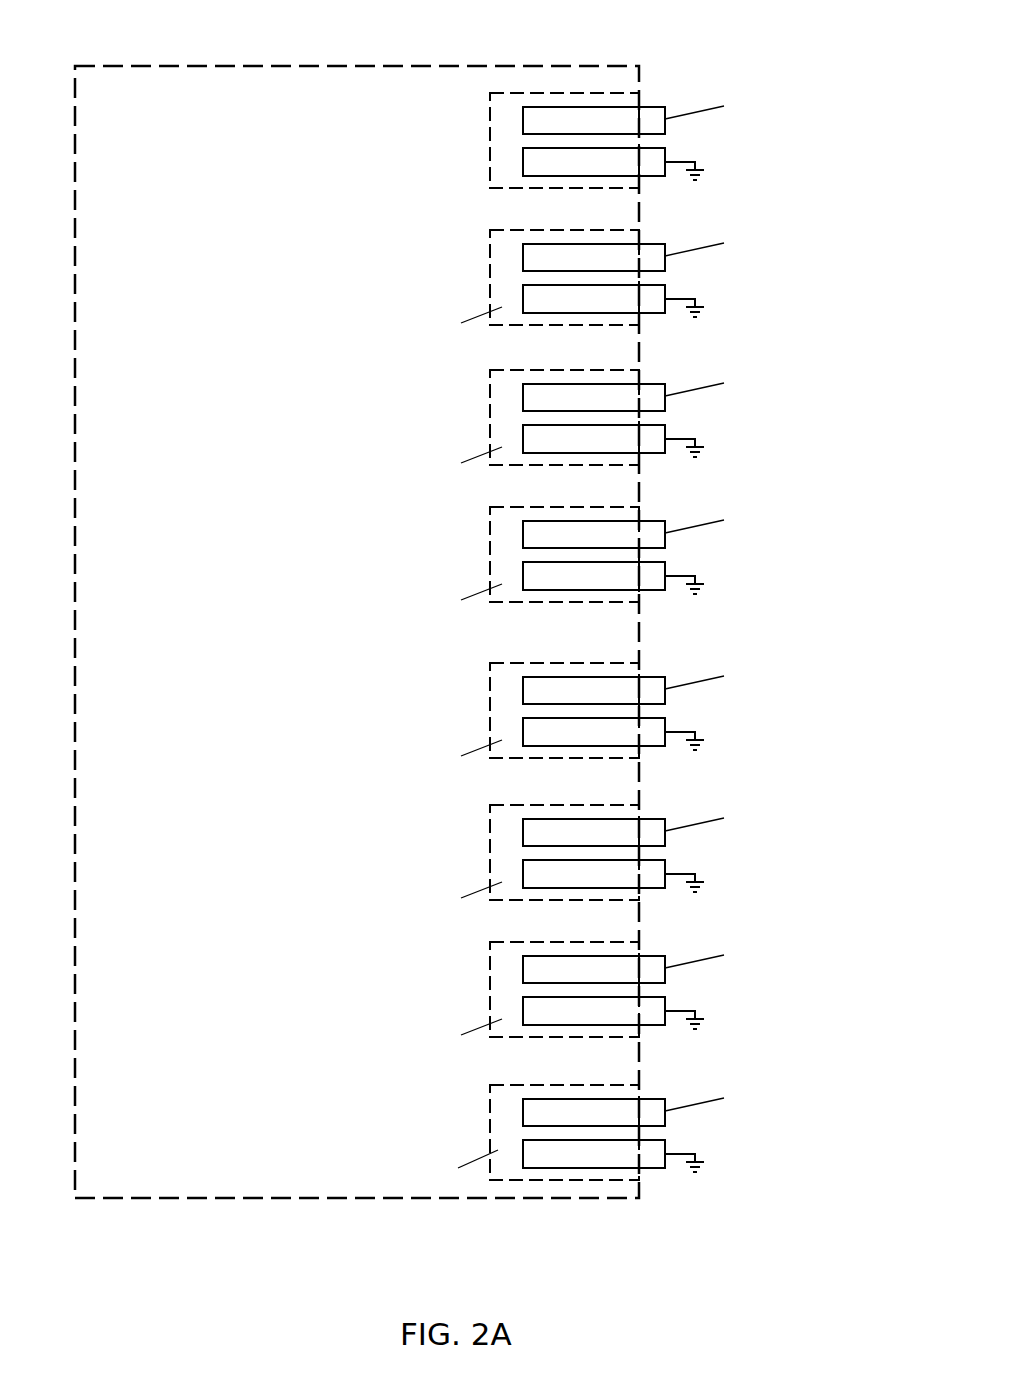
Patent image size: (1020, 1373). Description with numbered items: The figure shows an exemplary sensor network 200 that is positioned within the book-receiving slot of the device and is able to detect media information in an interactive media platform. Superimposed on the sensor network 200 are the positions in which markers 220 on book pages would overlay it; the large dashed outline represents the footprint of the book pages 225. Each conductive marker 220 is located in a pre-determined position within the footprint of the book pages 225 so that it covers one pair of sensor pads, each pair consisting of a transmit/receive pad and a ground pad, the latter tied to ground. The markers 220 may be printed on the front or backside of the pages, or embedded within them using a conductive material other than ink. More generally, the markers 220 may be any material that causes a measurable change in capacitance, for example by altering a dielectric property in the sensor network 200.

The sensor network 200 is at (655, 81).
The conductive marker 220 is at (491, 184).
The book pages 225 is at (75, 218).